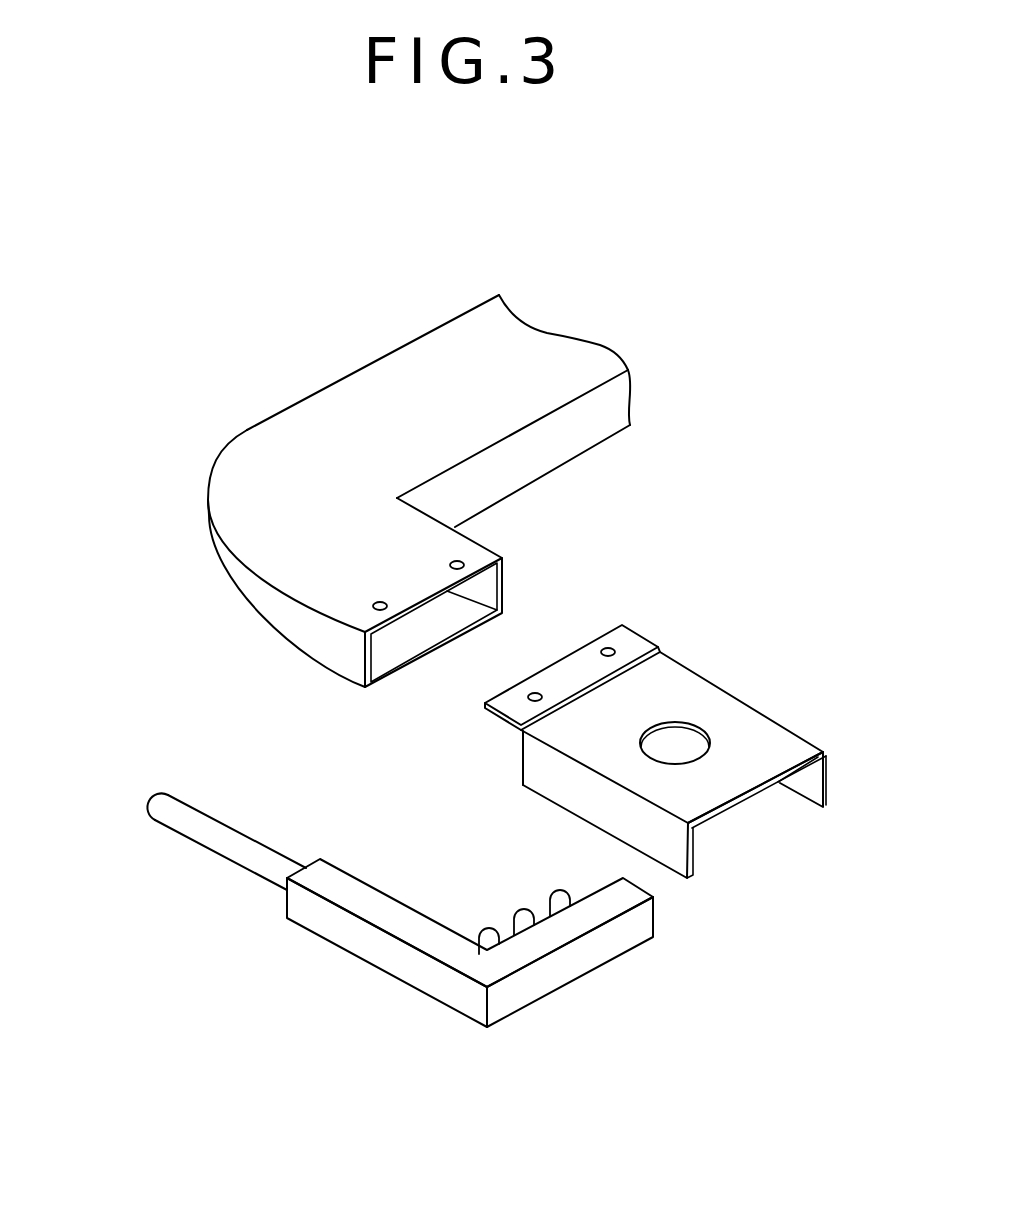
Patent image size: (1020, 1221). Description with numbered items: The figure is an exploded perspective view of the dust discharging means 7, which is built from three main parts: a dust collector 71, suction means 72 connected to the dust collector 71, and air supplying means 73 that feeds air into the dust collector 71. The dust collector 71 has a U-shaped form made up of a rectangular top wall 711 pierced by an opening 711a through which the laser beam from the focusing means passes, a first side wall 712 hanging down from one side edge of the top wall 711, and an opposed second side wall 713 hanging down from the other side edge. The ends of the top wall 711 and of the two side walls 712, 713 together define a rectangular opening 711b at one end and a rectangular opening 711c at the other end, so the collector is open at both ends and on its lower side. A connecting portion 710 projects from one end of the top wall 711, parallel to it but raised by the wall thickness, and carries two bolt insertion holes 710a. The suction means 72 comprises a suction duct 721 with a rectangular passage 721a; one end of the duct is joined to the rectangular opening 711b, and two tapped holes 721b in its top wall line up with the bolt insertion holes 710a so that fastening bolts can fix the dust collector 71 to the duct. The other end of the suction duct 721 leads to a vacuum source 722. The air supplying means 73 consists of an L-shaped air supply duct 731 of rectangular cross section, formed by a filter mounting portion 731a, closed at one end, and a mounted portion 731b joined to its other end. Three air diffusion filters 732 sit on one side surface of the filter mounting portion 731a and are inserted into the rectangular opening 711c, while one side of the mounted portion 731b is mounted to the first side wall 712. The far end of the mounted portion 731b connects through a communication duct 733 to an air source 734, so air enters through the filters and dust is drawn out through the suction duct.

The dust discharging means 7 is at (732, 462).
The suction means 72 is at (438, 283).
The suction duct 721 is at (243, 430).
The vacuum source 722 is at (590, 330).
The passage 721a is at (390, 657).
The tapped holes 721b is at (462, 560).
The dust collector 71 is at (760, 685).
The connecting portion 710 is at (628, 641).
The bolt insertion holes 710a is at (604, 648).
The top wall 711 is at (792, 742).
The opening 711a is at (675, 733).
The rectangular opening 711b is at (522, 758).
The rectangular opening 711c is at (742, 822).
The first side wall 712 is at (578, 792).
The second side wall 713 is at (807, 790).
The air supplying means 73 is at (355, 1008).
The air supply duct 731 is at (448, 1010).
The filter mounting portion 731a is at (555, 975).
The mounted portion 731b is at (336, 927).
The air diffusion filters 732 is at (560, 893).
The communication duct 733 is at (233, 847).
The air source 734 is at (155, 805).